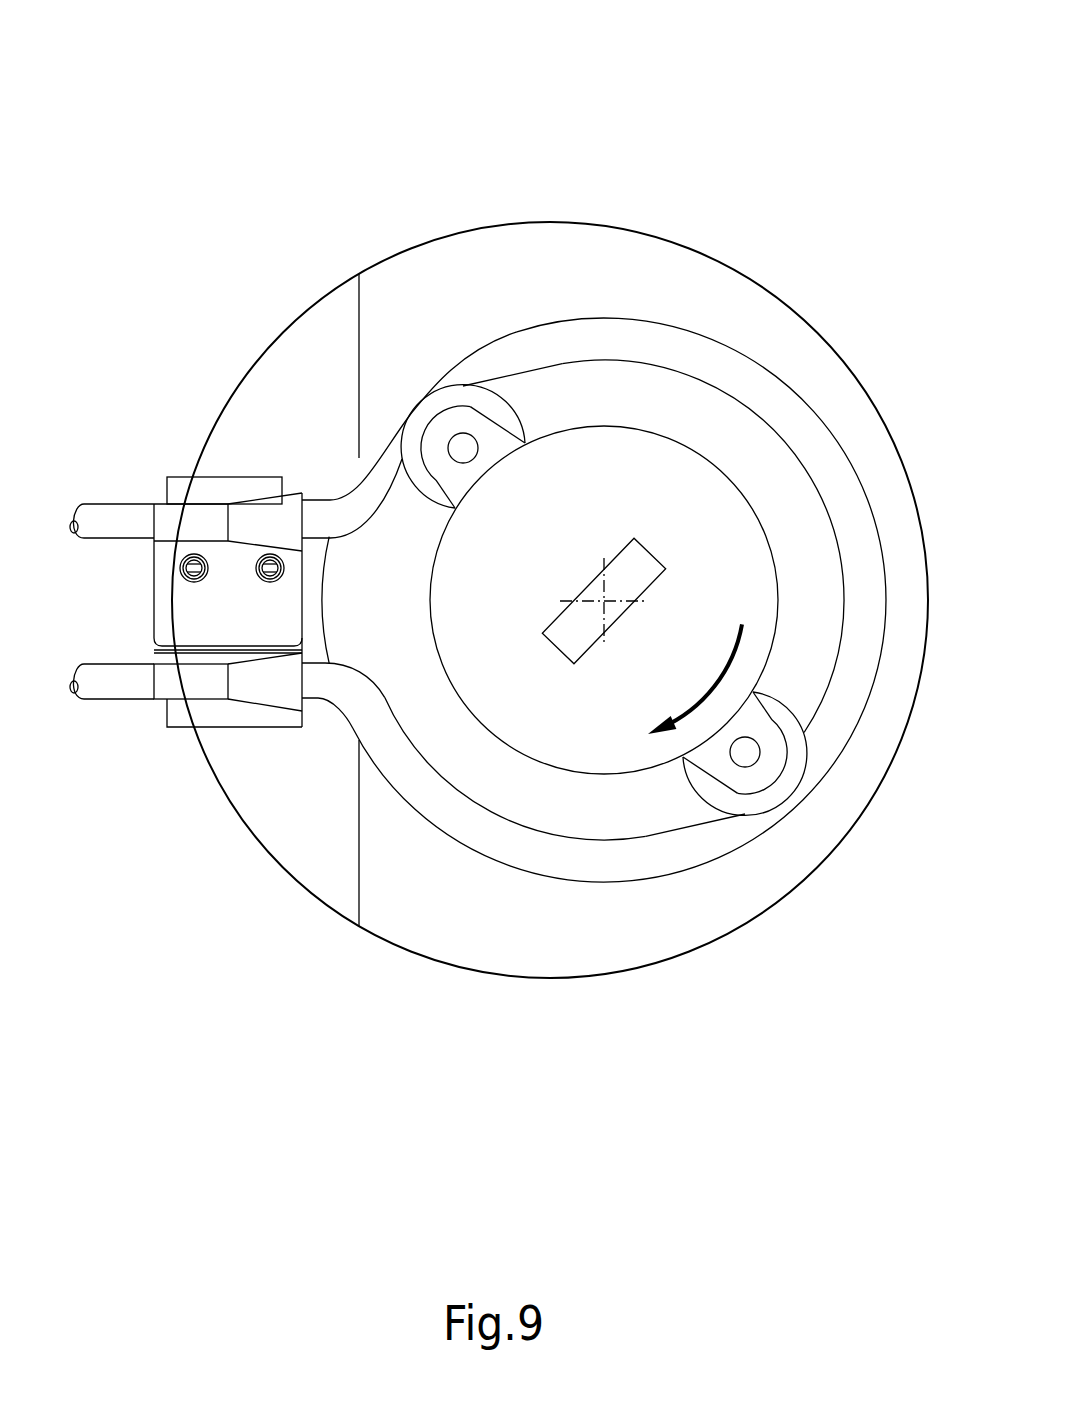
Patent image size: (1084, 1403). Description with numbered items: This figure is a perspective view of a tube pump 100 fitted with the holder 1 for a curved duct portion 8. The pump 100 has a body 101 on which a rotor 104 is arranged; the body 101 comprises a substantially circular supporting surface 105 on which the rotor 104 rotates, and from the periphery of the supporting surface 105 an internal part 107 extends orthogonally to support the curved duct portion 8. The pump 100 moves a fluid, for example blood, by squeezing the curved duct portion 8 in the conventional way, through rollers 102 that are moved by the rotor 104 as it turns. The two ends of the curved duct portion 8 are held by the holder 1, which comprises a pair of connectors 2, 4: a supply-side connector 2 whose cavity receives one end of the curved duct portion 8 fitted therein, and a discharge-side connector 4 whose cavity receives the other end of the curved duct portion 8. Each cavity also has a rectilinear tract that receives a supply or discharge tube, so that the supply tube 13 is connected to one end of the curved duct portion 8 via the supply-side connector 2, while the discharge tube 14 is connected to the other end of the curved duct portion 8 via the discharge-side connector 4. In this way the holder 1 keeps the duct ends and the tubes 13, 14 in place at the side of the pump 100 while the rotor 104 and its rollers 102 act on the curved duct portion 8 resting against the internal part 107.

The pump 100 is at (502, 536).
The body 101 is at (551, 283).
The roller 102 is at (455, 402).
The rotor 104 is at (607, 493).
The supporting surface 105 is at (760, 477).
The internal part 107 is at (782, 815).
The curved duct portion 8 is at (437, 793).
The holder 1 is at (120, 606).
The supply-side connector 2 is at (212, 712).
The discharge-side connector 4 is at (240, 492).
The supply tube 13 is at (89, 524).
The discharge tube 14 is at (93, 682).